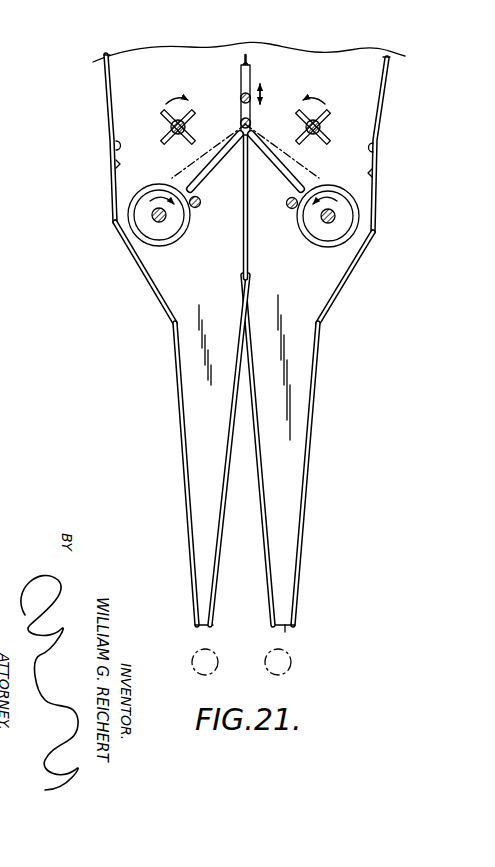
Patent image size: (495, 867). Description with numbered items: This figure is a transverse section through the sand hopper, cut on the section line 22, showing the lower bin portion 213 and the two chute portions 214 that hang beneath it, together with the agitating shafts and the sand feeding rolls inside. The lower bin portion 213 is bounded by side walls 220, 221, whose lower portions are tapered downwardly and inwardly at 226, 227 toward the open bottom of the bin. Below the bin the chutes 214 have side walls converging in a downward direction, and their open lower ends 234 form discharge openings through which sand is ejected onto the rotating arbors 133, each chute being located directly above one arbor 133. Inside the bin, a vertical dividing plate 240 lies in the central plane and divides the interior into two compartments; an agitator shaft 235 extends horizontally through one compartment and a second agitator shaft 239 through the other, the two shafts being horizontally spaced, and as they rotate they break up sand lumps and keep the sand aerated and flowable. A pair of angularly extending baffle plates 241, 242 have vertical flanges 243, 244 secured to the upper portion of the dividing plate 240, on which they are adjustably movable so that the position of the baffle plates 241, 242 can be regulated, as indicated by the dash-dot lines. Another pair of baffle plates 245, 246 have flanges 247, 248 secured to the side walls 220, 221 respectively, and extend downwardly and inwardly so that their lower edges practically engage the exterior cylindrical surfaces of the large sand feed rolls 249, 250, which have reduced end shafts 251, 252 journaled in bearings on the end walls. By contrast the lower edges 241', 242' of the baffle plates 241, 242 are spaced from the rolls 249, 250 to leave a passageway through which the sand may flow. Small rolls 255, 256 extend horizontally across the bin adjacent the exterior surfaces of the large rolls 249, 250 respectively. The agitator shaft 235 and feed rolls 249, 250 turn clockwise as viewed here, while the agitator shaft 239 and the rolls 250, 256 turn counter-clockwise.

The section line 22- 22 is at (245, 38).
The arbors 133 is at (293, 661).
The lower bin portion 213 is at (110, 210).
The chute portions 214 is at (177, 450).
The side wall 220 is at (112, 188).
The side wall 221 is at (377, 190).
The tapered lower portion of side wall 226 is at (157, 288).
The tapered lower portion of side wall 227 is at (350, 277).
The lower ends of chutes 234 is at (285, 632).
The agitator shaft 235 is at (171, 127).
The second agitator shaft 239 is at (320, 127).
The vertical dividing plate 240 is at (243, 248).
The baffle plate 241 is at (215, 172).
The lower edge of baffle plate 241' is at (195, 153).
The baffle plate 242 is at (276, 172).
The lower edge of baffle plate 242' is at (298, 153).
The vertical flange 243 is at (240, 90).
The vertical flange 244 is at (250, 84).
The baffle plate 245 is at (114, 162).
The baffle plate 246 is at (373, 173).
The flange 247 is at (114, 143).
The flange 248 is at (372, 147).
The large sand feed roll 249 is at (148, 233).
The large sand feed roll 250 is at (340, 230).
The reduced end shaft 251 is at (154, 219).
The reduced end shaft 252 is at (326, 223).
The small roll 255 is at (198, 209).
The small roll 256 is at (291, 209).